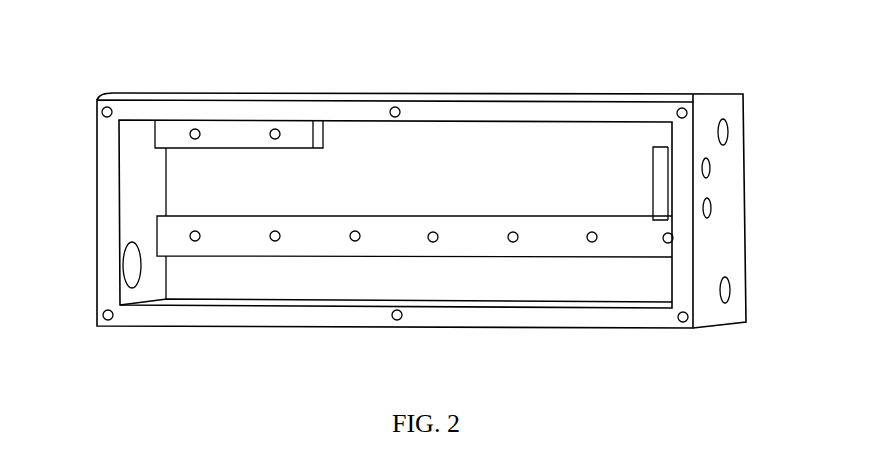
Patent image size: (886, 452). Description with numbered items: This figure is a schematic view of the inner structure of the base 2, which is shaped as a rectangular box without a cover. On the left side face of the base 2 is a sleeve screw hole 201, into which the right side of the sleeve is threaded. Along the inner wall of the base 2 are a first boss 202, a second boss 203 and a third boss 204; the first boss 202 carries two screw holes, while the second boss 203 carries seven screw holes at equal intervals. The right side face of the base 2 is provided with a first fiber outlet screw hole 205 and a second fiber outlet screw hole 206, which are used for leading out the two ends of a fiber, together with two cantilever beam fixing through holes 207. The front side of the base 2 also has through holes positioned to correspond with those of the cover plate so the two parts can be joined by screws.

The base 2 is at (497, 112).
The sleeve screw hole 201 is at (133, 265).
The first boss 202 is at (233, 133).
The second boss 203 is at (317, 232).
The third boss 204 is at (663, 172).
The first fiber outlet screw hole 205 is at (728, 132).
The second fiber outlet screw hole 206 is at (730, 287).
The cantilever beam fixing through holes 207 is at (712, 203).